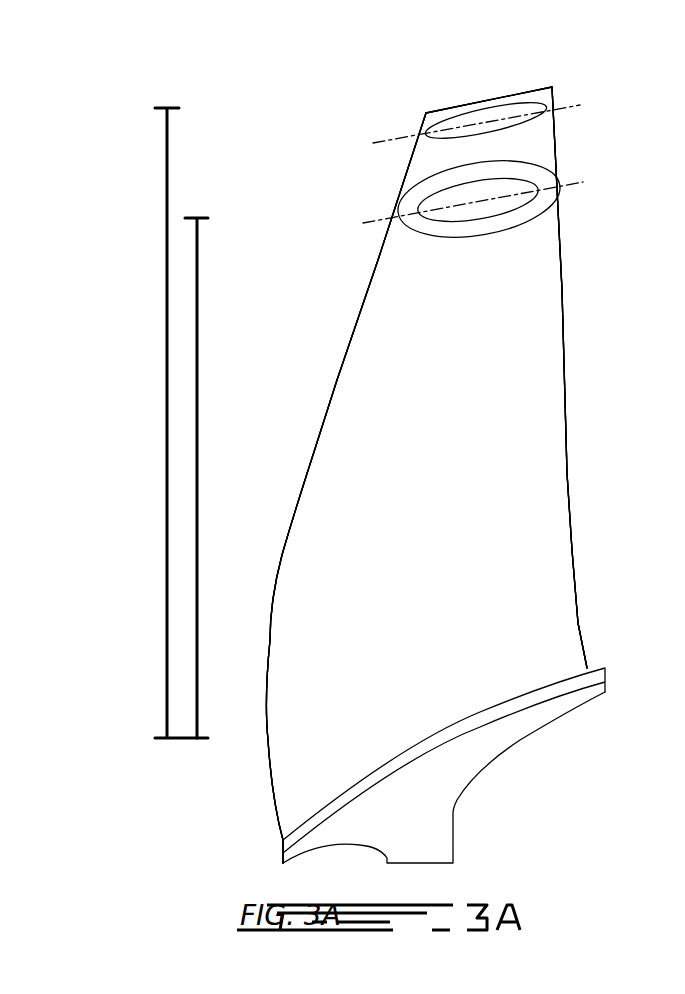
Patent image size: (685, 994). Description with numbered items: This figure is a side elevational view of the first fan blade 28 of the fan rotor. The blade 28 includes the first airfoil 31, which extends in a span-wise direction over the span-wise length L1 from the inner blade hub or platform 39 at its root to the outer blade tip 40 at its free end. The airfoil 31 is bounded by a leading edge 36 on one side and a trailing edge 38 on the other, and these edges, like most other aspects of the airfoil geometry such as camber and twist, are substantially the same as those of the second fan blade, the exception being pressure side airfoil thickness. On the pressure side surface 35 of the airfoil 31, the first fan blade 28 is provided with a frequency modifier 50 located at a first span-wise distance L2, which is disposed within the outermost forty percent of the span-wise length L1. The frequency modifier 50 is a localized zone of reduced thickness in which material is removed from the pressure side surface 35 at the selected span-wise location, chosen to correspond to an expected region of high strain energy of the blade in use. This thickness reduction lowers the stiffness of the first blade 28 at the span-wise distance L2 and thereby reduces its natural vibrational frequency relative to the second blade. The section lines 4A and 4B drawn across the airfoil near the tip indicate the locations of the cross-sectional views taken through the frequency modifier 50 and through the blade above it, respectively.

The first fan blade 28 is at (318, 268).
The first airfoil 31 is at (340, 453).
The pressure side surface 35 is at (446, 533).
The leading edge 36 is at (282, 555).
The trailing edge 38 is at (572, 548).
The platform 39 is at (358, 820).
The blade tip 40 is at (533, 93).
The frequency modifier 50 is at (485, 217).
The section line 4A is at (363, 223).
The section line 4B is at (373, 143).
The span-wise length L1 is at (167, 413).
The first span-wise distance L2 is at (197, 302).